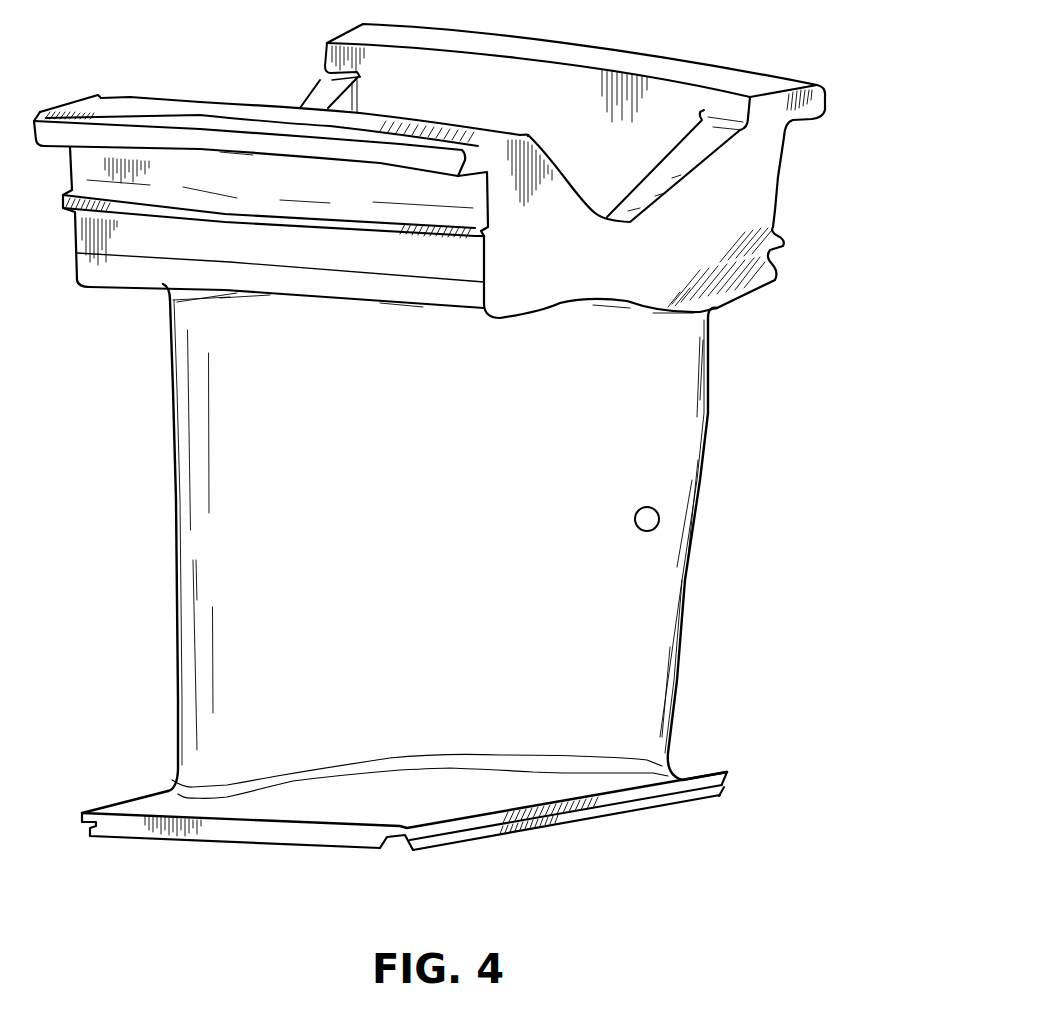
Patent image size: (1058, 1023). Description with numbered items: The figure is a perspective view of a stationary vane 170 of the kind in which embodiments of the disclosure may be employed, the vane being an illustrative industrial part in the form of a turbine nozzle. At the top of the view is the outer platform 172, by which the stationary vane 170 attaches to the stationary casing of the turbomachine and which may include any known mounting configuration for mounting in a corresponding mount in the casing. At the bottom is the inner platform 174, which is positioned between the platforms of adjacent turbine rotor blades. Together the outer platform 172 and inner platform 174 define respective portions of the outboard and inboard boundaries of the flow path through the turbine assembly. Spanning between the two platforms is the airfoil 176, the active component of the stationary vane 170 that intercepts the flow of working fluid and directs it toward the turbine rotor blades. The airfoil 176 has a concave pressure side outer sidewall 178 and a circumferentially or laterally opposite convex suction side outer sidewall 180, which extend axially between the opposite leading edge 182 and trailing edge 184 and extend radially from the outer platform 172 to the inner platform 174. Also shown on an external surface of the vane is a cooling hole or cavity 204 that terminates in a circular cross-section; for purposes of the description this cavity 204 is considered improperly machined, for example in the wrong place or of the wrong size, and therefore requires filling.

The stationary vane 170 is at (835, 97).
The outer platform 172 is at (710, 213).
The inner platform 174 is at (537, 783).
The airfoil 176 is at (527, 552).
The concave pressure side outer sidewall 178 is at (613, 632).
The convex suction side outer sidewall 180 is at (200, 457).
The leading edge 182 is at (177, 388).
The trailing edge 184 is at (717, 431).
The cooling hole or cavity 204 is at (648, 519).